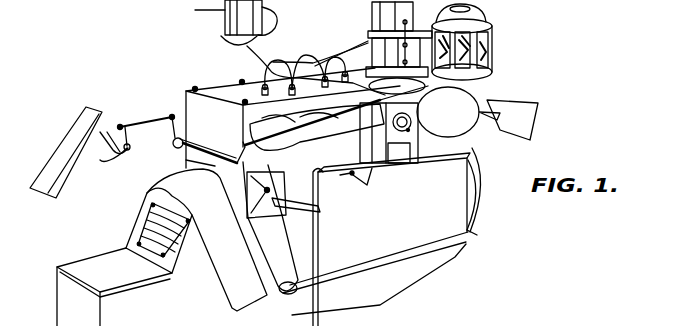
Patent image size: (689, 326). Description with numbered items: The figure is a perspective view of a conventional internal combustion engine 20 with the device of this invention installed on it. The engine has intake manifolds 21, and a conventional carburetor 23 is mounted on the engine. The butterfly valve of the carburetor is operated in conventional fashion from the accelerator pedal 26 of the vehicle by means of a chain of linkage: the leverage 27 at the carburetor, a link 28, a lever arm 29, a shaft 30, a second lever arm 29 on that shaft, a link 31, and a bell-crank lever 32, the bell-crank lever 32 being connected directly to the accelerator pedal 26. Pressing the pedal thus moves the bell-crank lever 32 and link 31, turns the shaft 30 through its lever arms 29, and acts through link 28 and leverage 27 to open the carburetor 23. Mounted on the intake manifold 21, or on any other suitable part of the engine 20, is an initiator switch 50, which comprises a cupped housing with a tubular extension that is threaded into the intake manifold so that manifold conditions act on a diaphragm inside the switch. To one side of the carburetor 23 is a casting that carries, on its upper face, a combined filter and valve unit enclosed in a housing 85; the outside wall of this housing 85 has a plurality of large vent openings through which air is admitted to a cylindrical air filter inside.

The internal combustion engine 20 is at (382, 237).
The intake manifolds 21 is at (420, 118).
The carburetor 23 is at (372, 42).
The accelerator pedal 26 is at (58, 160).
The leverage 27 is at (413, 112).
The link 28 is at (308, 120).
The lever arm 29 is at (173, 142).
The shaft 30 is at (173, 181).
The link 31 is at (150, 125).
The bell-crank lever 32 is at (108, 161).
The initiator switch 50 is at (378, 150).
The housing 85 is at (494, 42).